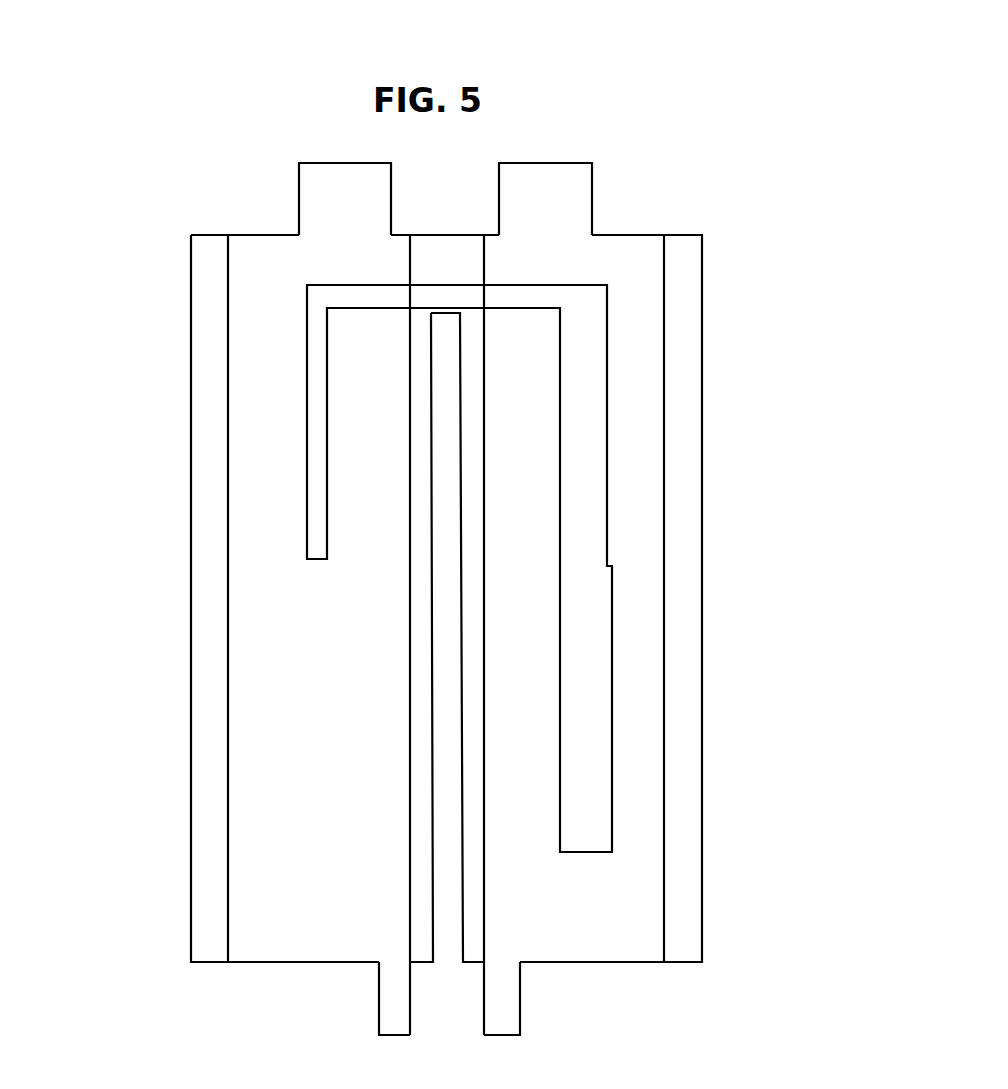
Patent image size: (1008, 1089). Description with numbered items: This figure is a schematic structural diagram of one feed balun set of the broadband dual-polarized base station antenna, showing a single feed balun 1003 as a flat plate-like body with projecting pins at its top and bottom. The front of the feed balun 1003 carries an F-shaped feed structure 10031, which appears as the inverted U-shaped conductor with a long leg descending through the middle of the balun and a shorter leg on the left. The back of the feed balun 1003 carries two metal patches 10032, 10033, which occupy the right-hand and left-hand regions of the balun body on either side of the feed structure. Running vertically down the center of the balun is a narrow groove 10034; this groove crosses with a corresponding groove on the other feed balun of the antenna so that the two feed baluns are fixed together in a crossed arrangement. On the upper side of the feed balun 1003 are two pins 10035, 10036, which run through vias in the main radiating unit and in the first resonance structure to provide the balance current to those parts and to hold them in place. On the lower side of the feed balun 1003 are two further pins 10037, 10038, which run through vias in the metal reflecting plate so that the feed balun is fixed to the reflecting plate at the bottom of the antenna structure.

The feed balun 1003 is at (683, 263).
The F-shaped feed structure 10031 is at (579, 411).
The metal patch 10032 is at (640, 632).
The metal patch 10033 is at (282, 633).
The groove 10034 is at (445, 794).
The pin 10035 is at (549, 185).
The pin 10036 is at (338, 193).
The pin 10037 is at (504, 1000).
The pin 10038 is at (397, 1000).